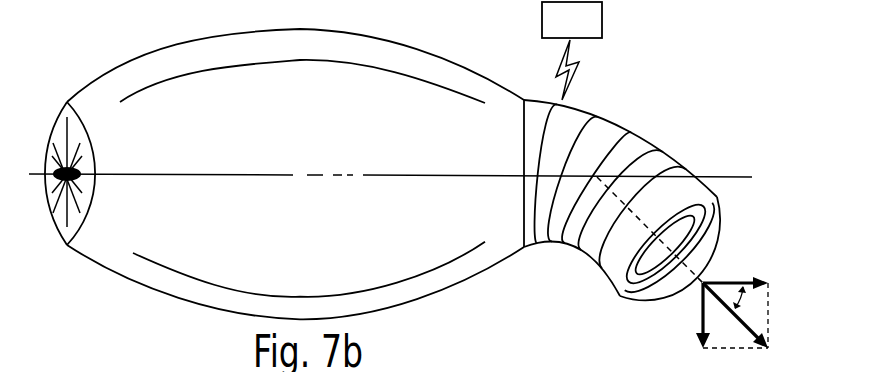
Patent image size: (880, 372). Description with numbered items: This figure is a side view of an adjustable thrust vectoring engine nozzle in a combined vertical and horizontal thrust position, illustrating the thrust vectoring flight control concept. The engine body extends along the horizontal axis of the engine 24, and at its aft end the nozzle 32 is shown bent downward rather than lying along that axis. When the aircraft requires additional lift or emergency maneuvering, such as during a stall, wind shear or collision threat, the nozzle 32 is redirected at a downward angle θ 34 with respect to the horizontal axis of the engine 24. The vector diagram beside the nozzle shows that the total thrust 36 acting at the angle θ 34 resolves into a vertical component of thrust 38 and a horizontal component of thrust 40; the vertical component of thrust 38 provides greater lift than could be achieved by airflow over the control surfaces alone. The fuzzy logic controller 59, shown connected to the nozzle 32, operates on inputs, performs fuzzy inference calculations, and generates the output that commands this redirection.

The horizontal axis of the engine 24 is at (417, 177).
The nozzle 32 is at (651, 143).
The downward angle θ 34 is at (741, 292).
The total thrust 36 is at (770, 347).
The vertical component of thrust 38 is at (703, 313).
The horizontal component of thrust 40 is at (735, 280).
The fuzzy logic controller (FLC) 59 is at (602, 13).